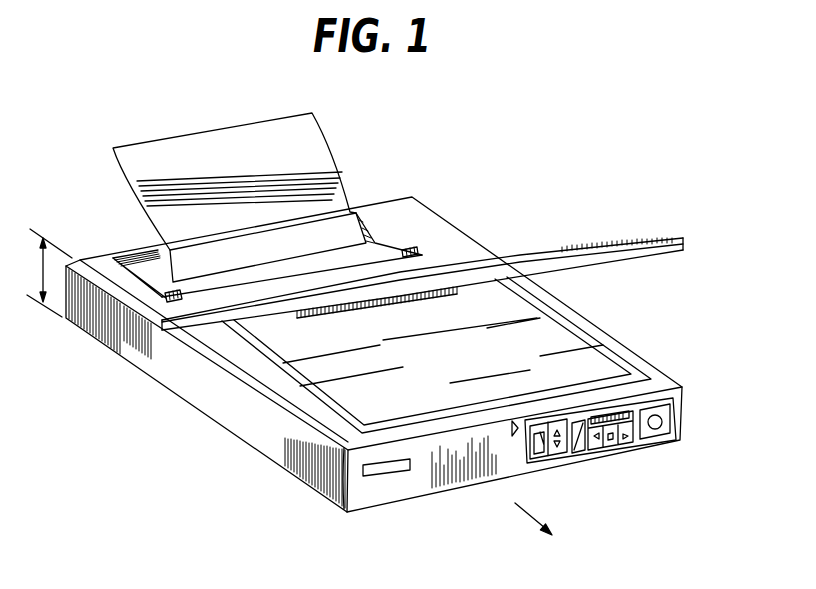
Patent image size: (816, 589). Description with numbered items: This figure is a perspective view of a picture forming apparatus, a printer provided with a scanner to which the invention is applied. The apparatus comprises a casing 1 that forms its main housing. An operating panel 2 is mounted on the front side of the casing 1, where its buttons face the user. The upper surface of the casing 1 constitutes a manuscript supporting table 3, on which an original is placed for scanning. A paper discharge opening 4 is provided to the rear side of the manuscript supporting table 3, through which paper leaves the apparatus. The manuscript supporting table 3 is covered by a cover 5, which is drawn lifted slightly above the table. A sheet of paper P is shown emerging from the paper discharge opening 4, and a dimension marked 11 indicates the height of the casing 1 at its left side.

The casing 1 is at (570, 307).
The operating panel 2 is at (627, 443).
The manuscript supporting table 3 is at (297, 367).
The paper discharge opening 4 is at (371, 237).
The cover 5 is at (543, 258).
The original document P is at (315, 152).
The housing height 11 is at (46, 273).